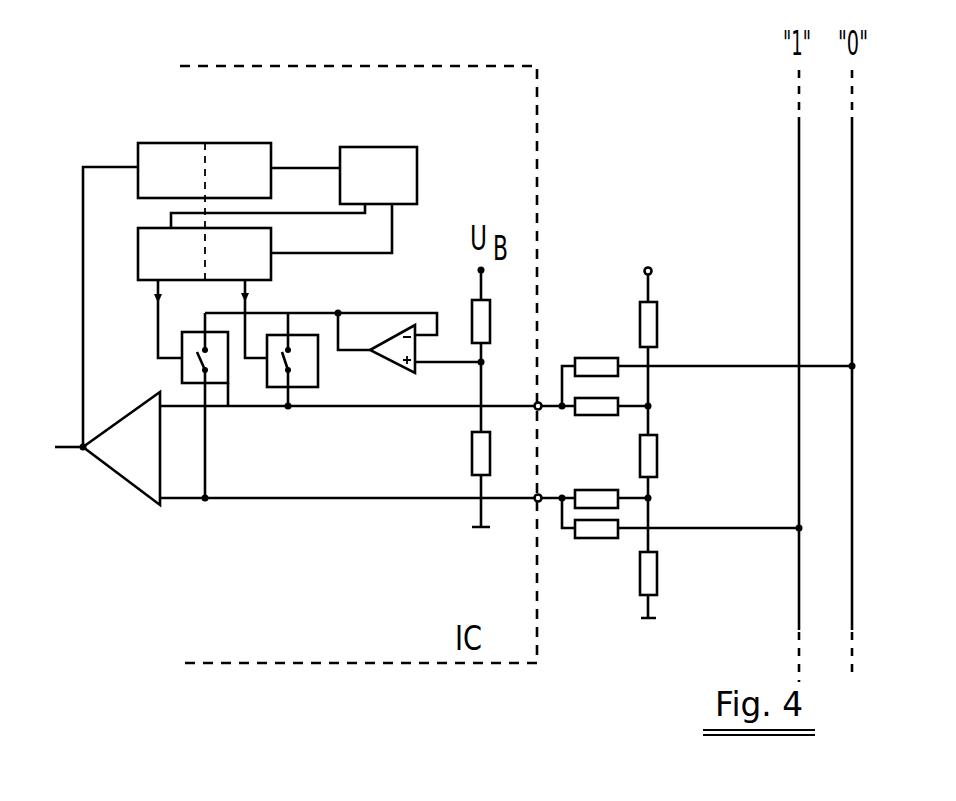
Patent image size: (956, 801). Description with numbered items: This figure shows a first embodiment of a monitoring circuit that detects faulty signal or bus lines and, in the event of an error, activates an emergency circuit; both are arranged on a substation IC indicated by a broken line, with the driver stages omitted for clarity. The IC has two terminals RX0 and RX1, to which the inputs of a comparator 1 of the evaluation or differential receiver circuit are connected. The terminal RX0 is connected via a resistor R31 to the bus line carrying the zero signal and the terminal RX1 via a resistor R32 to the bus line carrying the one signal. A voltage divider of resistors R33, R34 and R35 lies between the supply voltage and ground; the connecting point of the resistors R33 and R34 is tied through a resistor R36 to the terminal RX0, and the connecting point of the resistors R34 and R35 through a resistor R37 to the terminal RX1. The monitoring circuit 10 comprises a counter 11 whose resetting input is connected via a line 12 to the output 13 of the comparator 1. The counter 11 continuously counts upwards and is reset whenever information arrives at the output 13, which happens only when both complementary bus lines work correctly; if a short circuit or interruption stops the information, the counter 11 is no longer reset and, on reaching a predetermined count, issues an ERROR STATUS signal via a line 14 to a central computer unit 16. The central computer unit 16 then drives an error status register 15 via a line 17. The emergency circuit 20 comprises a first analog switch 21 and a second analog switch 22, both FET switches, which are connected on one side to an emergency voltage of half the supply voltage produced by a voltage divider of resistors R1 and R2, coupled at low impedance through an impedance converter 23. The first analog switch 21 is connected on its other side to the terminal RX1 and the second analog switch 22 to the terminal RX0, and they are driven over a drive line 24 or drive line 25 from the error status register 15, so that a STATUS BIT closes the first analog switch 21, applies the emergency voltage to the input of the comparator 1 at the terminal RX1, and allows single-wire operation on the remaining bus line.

The comparator 1 is at (142, 478).
The monitoring circuit 10 is at (123, 124).
The counter 11 is at (197, 147).
The line 12 is at (90, 165).
The output 13 is at (62, 448).
The line 14 is at (298, 165).
The error status register 15 is at (262, 243).
The central computer unit 16 is at (377, 148).
The line 17 is at (170, 213).
The emergency circuit 20 is at (170, 381).
The first analog switch 21 is at (226, 408).
The second analog switch 22 is at (315, 377).
The impedance converter 23 is at (395, 358).
The drive line 24 is at (158, 300).
The drive line 25 is at (247, 300).
The resistor R1 is at (472, 312).
The resistor R2 is at (472, 455).
The resistor R31 is at (618, 332).
The resistor R32 is at (615, 538).
The resistor R33 is at (657, 330).
The resistor R34 is at (657, 450).
The resistor R35 is at (657, 572).
The resistor R36 is at (618, 397).
The resistor R37 is at (612, 504).
The terminal RX0 is at (540, 410).
The terminal RX1 is at (535, 502).